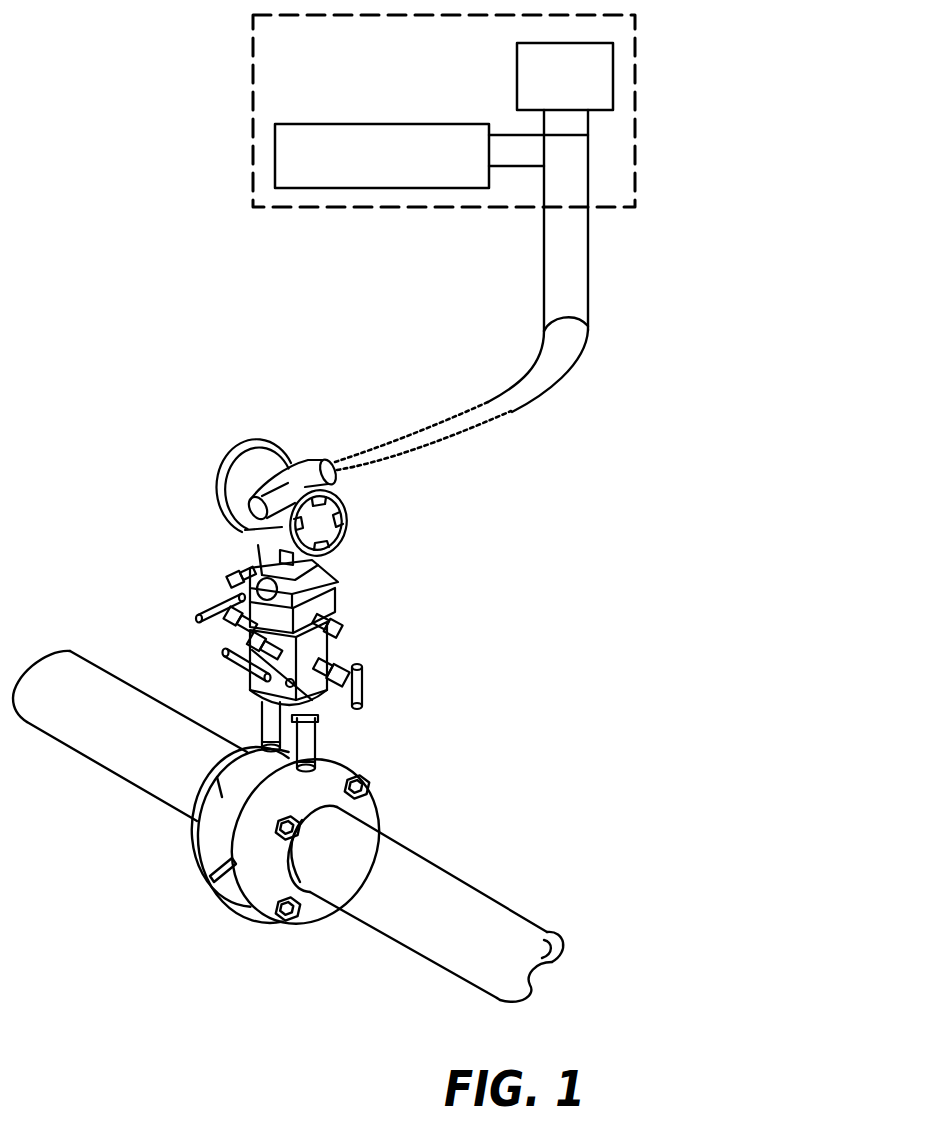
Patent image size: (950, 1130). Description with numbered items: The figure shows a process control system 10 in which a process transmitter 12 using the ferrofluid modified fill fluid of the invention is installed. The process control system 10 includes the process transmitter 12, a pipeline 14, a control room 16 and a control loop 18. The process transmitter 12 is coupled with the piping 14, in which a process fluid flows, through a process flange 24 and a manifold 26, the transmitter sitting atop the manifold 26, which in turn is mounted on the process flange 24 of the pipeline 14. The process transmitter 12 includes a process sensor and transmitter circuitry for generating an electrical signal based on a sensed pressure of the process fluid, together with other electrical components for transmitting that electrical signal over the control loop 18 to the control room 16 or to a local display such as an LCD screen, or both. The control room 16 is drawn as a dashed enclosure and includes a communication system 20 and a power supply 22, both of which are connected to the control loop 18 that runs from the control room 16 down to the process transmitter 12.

The process control system 10 is at (148, 296).
The process transmitter 12 is at (322, 452).
The pipeline 14 is at (436, 830).
The control room 16 is at (253, 118).
The control loop 18 is at (590, 332).
The communication system 20 is at (310, 124).
The power supply 22 is at (517, 80).
The process flange 24 is at (333, 609).
The manifold 26 is at (320, 650).